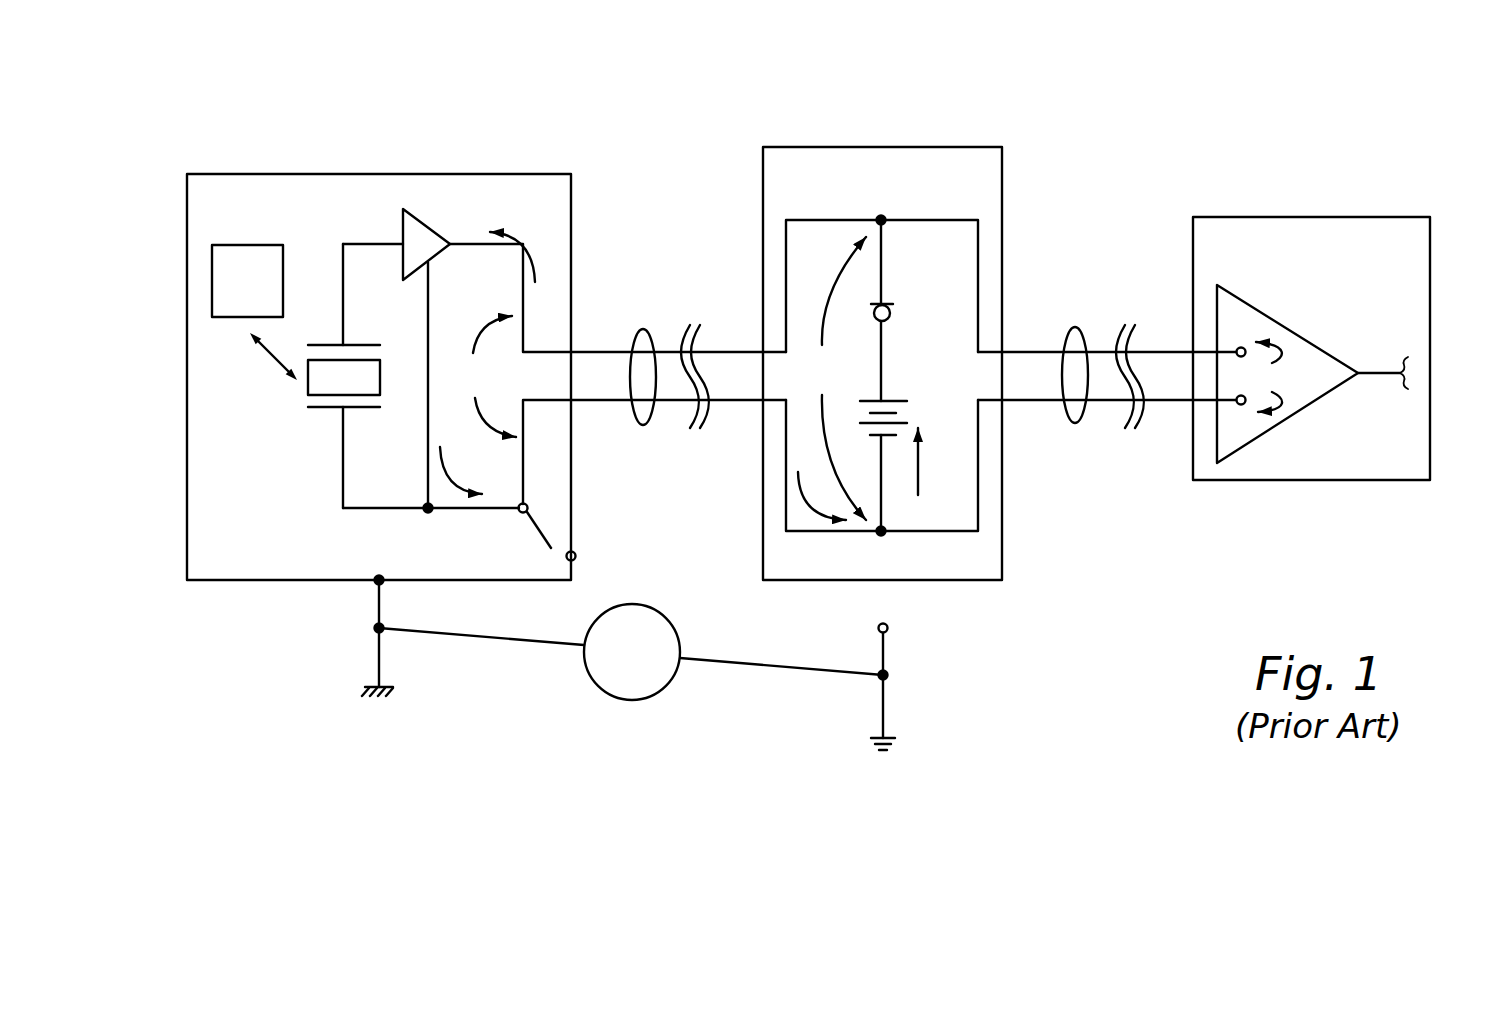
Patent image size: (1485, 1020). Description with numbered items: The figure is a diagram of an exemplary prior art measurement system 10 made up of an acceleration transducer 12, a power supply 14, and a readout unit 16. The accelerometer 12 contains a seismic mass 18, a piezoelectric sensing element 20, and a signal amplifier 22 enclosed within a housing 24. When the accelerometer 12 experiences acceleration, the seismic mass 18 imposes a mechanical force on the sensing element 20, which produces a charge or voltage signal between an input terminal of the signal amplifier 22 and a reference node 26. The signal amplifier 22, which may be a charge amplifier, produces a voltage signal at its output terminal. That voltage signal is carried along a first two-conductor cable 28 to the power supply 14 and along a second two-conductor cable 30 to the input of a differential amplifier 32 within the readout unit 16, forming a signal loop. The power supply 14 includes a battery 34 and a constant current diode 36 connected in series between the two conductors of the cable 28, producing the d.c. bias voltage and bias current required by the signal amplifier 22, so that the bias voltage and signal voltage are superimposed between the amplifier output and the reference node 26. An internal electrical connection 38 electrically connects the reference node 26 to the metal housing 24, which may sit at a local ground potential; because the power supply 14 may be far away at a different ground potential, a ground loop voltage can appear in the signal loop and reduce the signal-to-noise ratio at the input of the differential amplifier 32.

The measurement system 10 is at (930, 98).
The acceleration transducer 12 is at (355, 148).
The power supply 14 is at (982, 194).
The readout unit 16 is at (1295, 303).
The seismic mass 18 is at (231, 298).
The piezoelectric sensing element 20 is at (307, 391).
The signal amplifier 22 is at (403, 232).
The housing 24 is at (232, 220).
The reference node 26 is at (425, 512).
The first two-conductor cable 28 is at (641, 425).
The second two-conductor cable 30 is at (1073, 423).
The differential amplifier 32 is at (1285, 422).
The battery 34 is at (903, 423).
The constant current diode 36 is at (890, 318).
The internal electrical connection 38 is at (535, 532).